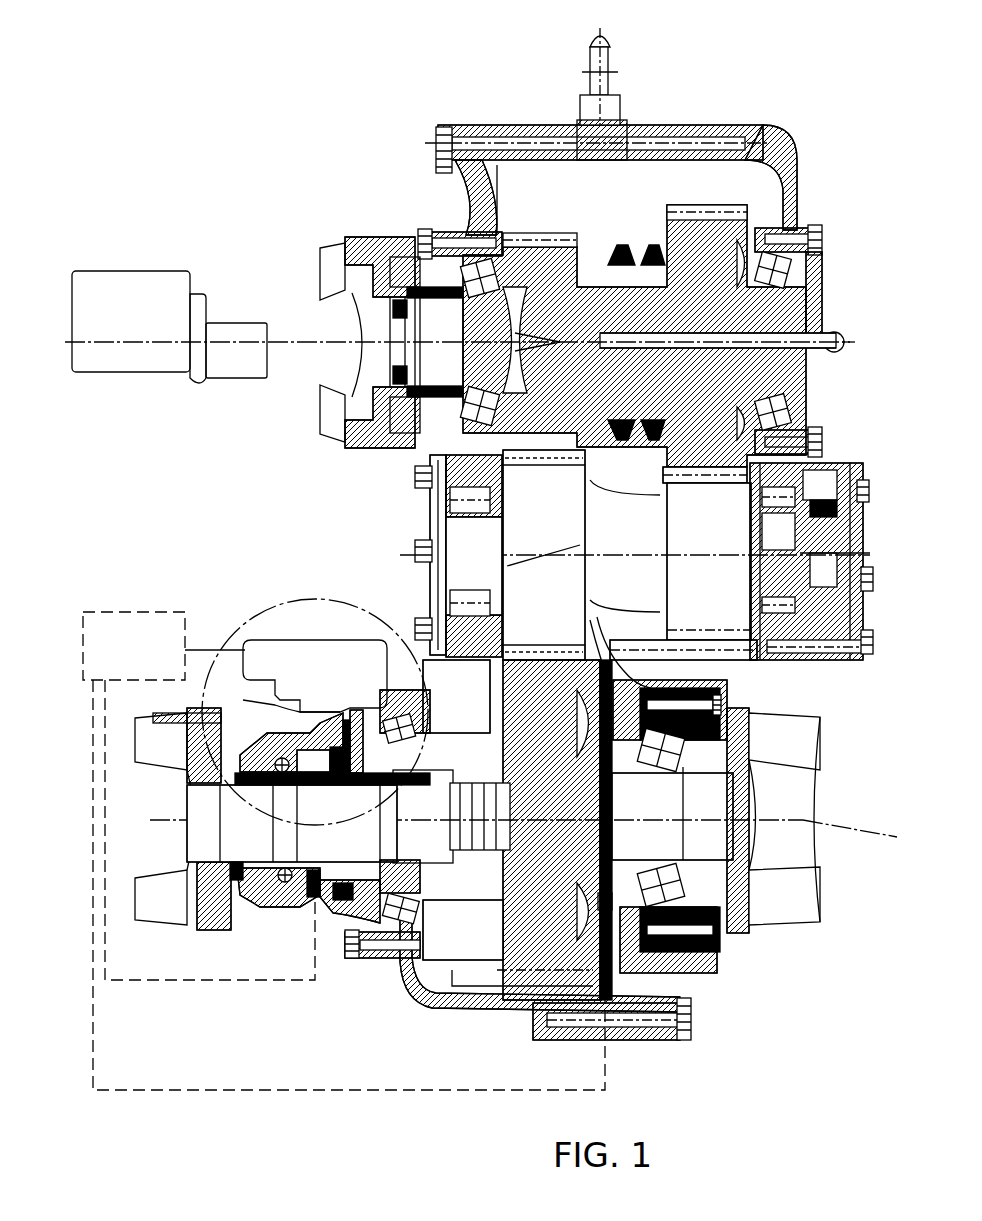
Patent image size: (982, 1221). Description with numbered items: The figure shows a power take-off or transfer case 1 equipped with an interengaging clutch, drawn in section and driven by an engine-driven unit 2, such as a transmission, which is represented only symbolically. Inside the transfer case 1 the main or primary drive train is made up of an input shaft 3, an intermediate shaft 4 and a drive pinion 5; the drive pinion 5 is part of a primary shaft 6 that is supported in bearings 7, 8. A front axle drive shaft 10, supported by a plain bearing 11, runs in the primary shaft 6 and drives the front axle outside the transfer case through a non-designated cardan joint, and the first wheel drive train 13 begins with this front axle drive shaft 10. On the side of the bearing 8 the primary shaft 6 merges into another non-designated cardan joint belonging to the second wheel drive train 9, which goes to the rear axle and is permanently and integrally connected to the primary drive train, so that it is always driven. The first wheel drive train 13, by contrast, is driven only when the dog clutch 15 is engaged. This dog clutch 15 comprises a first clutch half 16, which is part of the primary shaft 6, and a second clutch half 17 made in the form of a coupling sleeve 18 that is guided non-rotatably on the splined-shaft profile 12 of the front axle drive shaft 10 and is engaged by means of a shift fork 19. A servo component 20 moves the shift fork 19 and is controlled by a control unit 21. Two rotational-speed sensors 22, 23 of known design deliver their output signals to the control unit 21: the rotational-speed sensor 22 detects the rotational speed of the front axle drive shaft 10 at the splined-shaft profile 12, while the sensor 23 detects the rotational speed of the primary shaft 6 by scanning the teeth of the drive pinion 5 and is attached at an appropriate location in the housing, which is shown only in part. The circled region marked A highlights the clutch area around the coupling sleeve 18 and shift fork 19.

The transfer case 1 is at (322, 208).
The engine-driven unit 2 is at (138, 283).
The input shaft 3 is at (747, 240).
The intermediate shaft 4 is at (650, 533).
The drive pinion 5 is at (600, 678).
The primary shaft 6 is at (627, 793).
The bearing 7 is at (400, 907).
The bearing 8 is at (717, 913).
The second wheel drive train 9 is at (867, 833).
The front axle drive shaft 10 is at (428, 837).
The plain bearing 11 is at (467, 790).
The splined-shaft profile 12 is at (353, 777).
The first wheel drive train 13 is at (152, 808).
The dog clutch 15 is at (277, 910).
The first clutch half 16 is at (358, 947).
The second clutch half 17 is at (360, 717).
The coupling sleeve 18 is at (333, 655).
The shift fork 19 is at (317, 710).
The servo component 20 is at (347, 712).
The control unit 21 is at (165, 625).
The rotational-speed sensor 22 is at (308, 913).
The rotational-speed sensor 23 is at (695, 945).
The detail region A is at (345, 595).